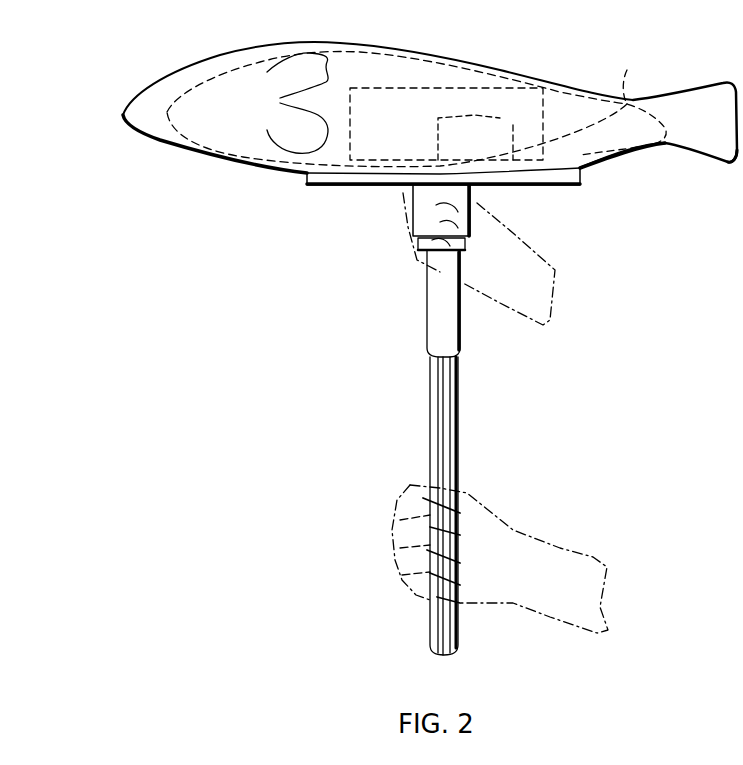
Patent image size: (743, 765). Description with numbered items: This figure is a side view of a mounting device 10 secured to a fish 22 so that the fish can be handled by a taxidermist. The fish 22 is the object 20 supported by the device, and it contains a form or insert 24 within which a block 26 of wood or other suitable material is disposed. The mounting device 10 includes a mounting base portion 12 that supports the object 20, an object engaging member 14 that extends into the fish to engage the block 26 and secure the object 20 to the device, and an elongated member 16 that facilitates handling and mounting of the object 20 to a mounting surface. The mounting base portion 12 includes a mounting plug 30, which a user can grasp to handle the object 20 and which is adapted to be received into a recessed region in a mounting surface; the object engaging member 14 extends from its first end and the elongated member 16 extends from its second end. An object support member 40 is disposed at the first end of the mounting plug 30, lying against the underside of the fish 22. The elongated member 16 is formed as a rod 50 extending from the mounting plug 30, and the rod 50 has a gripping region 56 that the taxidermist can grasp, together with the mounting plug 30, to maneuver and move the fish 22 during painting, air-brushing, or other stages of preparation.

The mounting device 10 is at (327, 337).
The mounting base portion 12 is at (570, 217).
The object engaging member 14 is at (485, 137).
The elongated member 16 is at (518, 373).
The object 20 is at (533, 50).
The fish 22 is at (330, 42).
The form or insert 24 is at (627, 75).
The block 26 is at (405, 85).
The mounting plug 30 is at (420, 200).
The object support member 40 is at (318, 184).
The rod 50 is at (428, 373).
The gripping region 56 is at (462, 426).